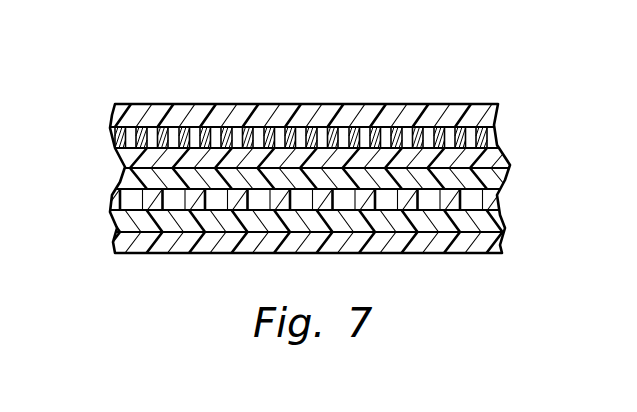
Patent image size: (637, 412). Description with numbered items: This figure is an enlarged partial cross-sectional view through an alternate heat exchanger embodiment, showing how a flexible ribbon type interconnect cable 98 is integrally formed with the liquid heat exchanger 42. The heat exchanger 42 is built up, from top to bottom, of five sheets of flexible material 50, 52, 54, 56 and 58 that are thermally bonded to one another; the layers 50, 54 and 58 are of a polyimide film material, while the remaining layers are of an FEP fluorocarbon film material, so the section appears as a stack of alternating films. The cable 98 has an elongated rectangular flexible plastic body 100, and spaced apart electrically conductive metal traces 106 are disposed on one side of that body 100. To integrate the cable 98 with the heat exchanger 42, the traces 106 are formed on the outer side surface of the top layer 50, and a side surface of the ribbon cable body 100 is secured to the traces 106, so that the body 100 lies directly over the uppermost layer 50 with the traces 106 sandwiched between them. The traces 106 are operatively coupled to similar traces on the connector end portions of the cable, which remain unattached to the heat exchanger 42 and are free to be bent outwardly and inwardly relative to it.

The flexible ribbon type interconnect cable 98 is at (375, 96).
The flexible plastic body 100 is at (440, 105).
The electrically conductive metal traces 106 is at (172, 106).
The liquid heat exchanger 42 is at (99, 150).
The sheet of flexible material 50 is at (495, 151).
The sheet of flexible material 52 is at (501, 175).
The sheet of flexible material 54 is at (499, 196).
The sheet of flexible material 56 is at (502, 223).
The sheet of flexible material 58 is at (503, 239).